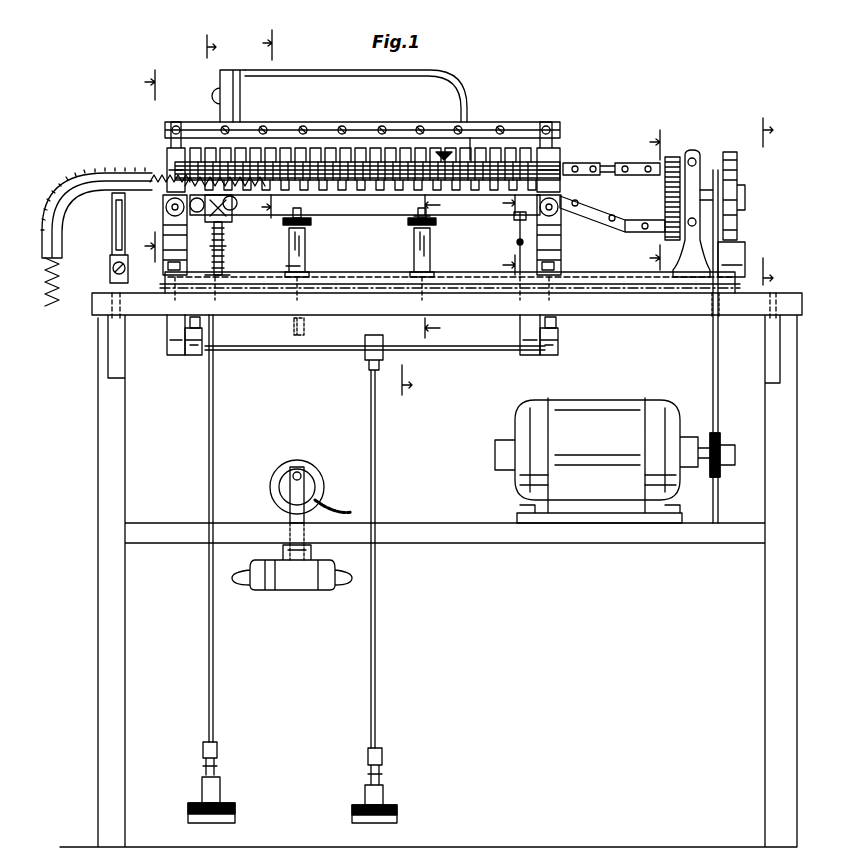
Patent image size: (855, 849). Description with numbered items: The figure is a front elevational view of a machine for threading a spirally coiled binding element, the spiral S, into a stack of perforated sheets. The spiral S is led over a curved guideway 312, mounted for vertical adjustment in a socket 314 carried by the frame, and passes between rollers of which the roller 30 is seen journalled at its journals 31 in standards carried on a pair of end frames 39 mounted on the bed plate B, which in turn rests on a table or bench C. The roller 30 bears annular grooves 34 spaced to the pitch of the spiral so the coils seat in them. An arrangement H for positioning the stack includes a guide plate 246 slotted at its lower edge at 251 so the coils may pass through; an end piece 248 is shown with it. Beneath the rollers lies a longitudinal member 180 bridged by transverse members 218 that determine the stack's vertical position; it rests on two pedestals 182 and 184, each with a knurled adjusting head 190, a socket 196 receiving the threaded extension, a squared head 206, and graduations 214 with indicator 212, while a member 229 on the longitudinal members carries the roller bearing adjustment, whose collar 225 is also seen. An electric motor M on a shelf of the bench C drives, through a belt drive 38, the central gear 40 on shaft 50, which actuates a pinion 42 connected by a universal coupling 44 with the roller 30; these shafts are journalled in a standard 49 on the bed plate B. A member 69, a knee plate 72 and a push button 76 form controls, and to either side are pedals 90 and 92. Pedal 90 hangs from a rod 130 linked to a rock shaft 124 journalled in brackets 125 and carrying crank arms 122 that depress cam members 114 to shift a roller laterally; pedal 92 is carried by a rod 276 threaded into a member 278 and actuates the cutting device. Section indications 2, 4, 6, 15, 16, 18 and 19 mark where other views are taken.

The table or bench C is at (108, 590).
The bed plate B is at (582, 280).
The electric motor M is at (598, 470).
The spiral S is at (50, 302).
The arrangement for positioning the stack H is at (352, 52).
The guide plate 246 is at (410, 95).
The cover end piece 248 is at (292, 58).
The roller 30 is at (495, 160).
The annular grooves 34 is at (475, 160).
The slot 251 is at (444, 150).
The transversely extending members 218 is at (412, 192).
The longitudinally extending member 180 is at (365, 205).
The journal 31 is at (170, 168).
The end frame 39 is at (165, 225).
The member 278 is at (222, 222).
The screw base 212 is at (283, 240).
The graduations 214 is at (286, 252).
The knurled adjusting head 190 is at (305, 226).
The pedestal 182 is at (314, 247).
The pedestal 184 is at (439, 247).
The socket 196 is at (418, 218).
The member 229 is at (518, 225).
The rod collar 225 is at (517, 243).
The squared head 206 is at (302, 318).
The universal coupling 44 is at (602, 162).
The central gear 40 is at (665, 198).
The pinion 42 is at (672, 155).
The standard 49 is at (700, 175).
The belt drive 38 is at (712, 377).
The shaft 50 is at (746, 200).
The curved guideway 312 is at (68, 194).
The socket 314 is at (110, 264).
The bracket 125 is at (170, 328).
The crank arm 122 is at (194, 356).
The member 114 is at (201, 322).
The rock shaft 124 is at (452, 352).
The rod 276 is at (207, 617).
The rod 130 is at (377, 617).
The pedal 92 is at (225, 806).
The pedal 90 is at (354, 808).
The push button 76 is at (305, 474).
The member 69 is at (290, 510).
The plate 72 is at (292, 590).
The section line 4 is at (315, 217).
The section line 16 is at (256, 121).
The section line 6 is at (141, 166).
The section line 2 is at (775, 203).
The section line 15 is at (639, 200).
The section line 18 is at (445, 266).
The section line 19 is at (496, 233).